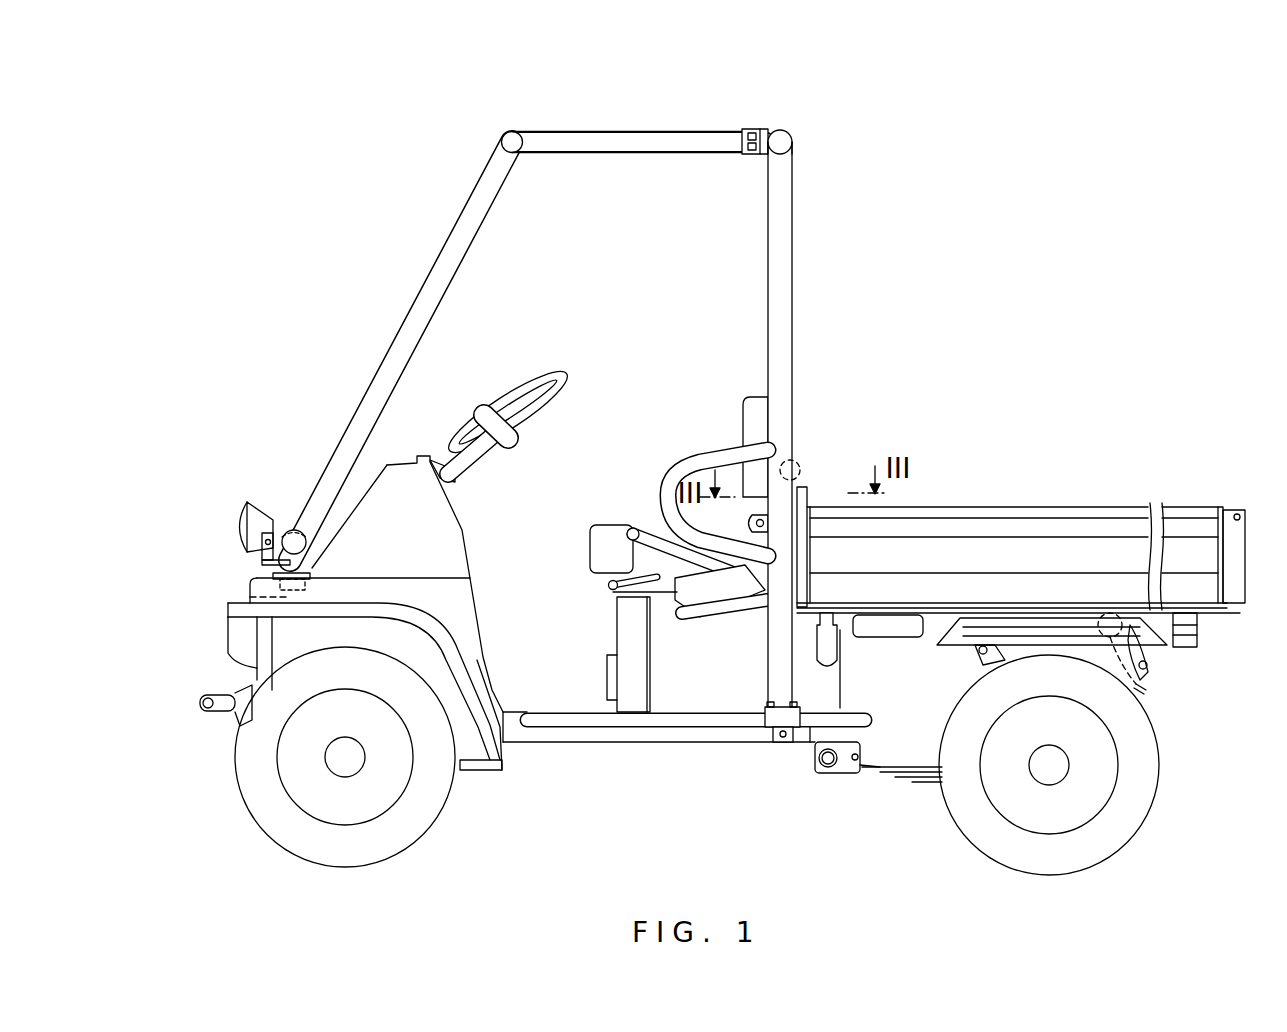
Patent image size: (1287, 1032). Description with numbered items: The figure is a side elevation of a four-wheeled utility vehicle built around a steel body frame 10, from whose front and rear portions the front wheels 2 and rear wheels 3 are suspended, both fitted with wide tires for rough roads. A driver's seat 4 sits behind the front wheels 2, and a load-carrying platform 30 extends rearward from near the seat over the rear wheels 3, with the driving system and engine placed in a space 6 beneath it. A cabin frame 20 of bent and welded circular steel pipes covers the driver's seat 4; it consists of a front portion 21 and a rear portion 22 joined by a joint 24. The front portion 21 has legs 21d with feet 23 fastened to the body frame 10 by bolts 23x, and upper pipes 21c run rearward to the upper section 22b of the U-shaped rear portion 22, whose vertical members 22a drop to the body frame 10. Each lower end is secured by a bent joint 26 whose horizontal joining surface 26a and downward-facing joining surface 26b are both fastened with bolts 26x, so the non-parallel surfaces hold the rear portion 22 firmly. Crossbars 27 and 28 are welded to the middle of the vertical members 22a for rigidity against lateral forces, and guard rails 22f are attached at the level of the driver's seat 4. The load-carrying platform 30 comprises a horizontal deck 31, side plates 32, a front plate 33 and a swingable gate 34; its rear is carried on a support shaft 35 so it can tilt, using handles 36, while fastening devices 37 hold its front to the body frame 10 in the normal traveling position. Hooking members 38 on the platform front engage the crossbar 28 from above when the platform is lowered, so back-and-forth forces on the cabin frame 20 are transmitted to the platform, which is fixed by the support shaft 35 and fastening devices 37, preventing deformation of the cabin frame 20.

The front wheels 2 is at (427, 805).
The rear wheels 3 is at (1128, 810).
The driver's seat 4 is at (598, 538).
The space 6 is at (922, 727).
The body frame 10 is at (587, 735).
The cabin frame 20 is at (632, 389).
The front portion 21 is at (432, 278).
The upper pipes 21c is at (620, 148).
The legs 21d is at (320, 527).
The rear portion 22 is at (871, 421).
The vertical members 22a is at (783, 253).
The upper section 22b is at (772, 150).
The guard rails 22f is at (698, 460).
The feet 23 is at (273, 573).
The bolts 23x is at (262, 592).
The joint 24 is at (755, 137).
The joint 26 is at (739, 771).
The horizontal joining surface 26a is at (763, 715).
The joining surface facing down 26b is at (767, 745).
The bolts 26x is at (783, 740).
The crossbar 27 is at (793, 455).
The crossbar 28 is at (783, 600).
The load-carrying platform 30 is at (1021, 469).
The deck 31 is at (1050, 605).
The side plates 32 is at (948, 543).
The front plate 33 is at (808, 503).
The swingable gate 34 is at (1186, 496).
The support shaft 35 is at (1146, 689).
The handles 36 is at (898, 642).
The fastening devices 37 is at (845, 650).
The hooking members 38 is at (730, 612).